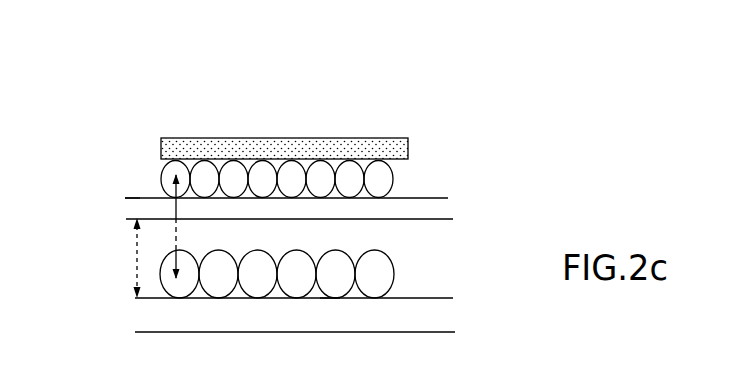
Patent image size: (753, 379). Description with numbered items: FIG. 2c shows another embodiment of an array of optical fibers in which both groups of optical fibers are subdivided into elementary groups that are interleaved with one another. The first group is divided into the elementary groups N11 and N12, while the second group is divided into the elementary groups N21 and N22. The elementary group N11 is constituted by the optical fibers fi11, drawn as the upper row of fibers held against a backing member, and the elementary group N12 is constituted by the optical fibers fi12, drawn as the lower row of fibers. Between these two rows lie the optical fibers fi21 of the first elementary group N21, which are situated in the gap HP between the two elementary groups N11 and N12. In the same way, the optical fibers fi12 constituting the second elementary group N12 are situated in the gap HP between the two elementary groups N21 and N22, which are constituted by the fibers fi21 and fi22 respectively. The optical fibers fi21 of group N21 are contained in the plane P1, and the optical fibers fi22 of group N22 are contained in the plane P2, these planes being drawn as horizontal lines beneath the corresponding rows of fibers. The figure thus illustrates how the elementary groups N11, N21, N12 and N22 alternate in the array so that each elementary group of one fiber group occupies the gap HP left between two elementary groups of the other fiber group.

The elementary group N11 is at (315, 146).
The elementary group N21 is at (443, 212).
The elementary group N12 is at (305, 312).
The elementary group N22 is at (448, 312).
The optical fibers fi11 is at (246, 146).
The optical fibers fi21 is at (127, 204).
The optical fibers fi12 is at (216, 290).
The optical fibers fi22 is at (330, 322).
The plane P1 is at (301, 223).
The plane P2 is at (308, 335).
The gap HP is at (176, 224).